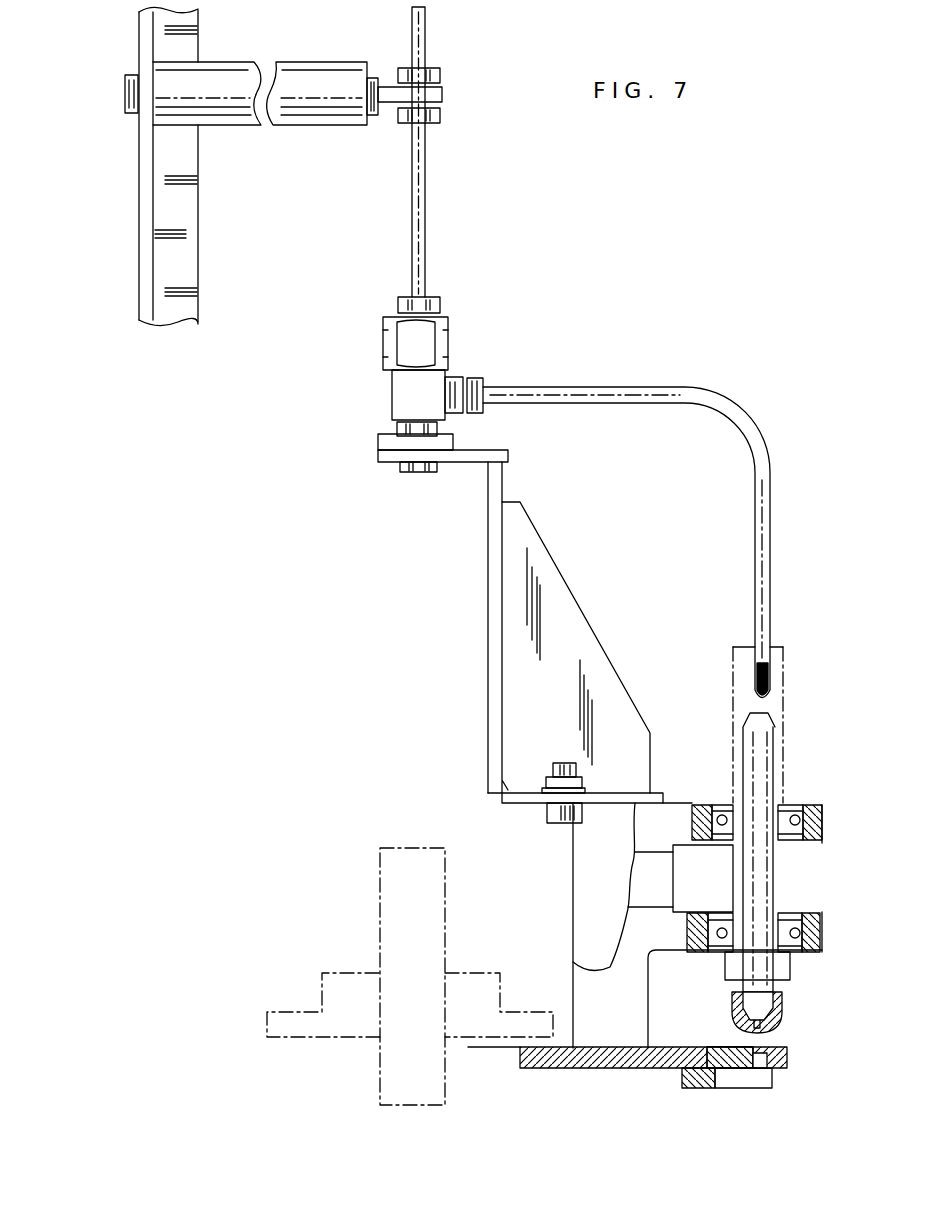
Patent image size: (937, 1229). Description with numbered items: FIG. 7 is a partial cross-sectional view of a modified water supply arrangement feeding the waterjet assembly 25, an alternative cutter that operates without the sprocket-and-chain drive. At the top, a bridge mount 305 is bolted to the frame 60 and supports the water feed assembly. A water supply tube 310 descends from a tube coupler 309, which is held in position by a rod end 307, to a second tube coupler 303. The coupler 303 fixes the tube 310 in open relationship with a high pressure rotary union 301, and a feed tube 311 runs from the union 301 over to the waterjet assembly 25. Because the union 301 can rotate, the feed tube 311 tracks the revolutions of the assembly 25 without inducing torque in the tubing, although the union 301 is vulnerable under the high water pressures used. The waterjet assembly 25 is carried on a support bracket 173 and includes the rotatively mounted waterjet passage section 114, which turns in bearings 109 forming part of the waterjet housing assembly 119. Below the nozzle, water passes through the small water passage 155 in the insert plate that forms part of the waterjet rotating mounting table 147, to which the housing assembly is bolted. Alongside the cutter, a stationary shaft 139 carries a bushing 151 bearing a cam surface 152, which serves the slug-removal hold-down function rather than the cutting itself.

The main tube support 60 is at (140, 133).
The bridge mount 305 is at (292, 62).
The tube coupler 309 is at (440, 74).
The rod end 307 is at (443, 95).
The water supply tube 310 is at (425, 246).
The tube coupler 303 is at (450, 341).
The high pressure rotary union 301 is at (400, 389).
The feed tube 311 is at (771, 542).
The support bracket 173 is at (563, 697).
The waterjet passage section 114 is at (758, 768).
The bearings 109 is at (806, 812).
The waterjet assembly 25 is at (785, 884).
The waterjet housing assembly 119 is at (624, 1014).
The stationary shaft 139 is at (428, 910).
The bushing 151 is at (458, 973).
The cam surface 152 is at (301, 1011).
The waterjet rotating mounting table 147 is at (655, 1068).
The water passage 155 is at (762, 1072).